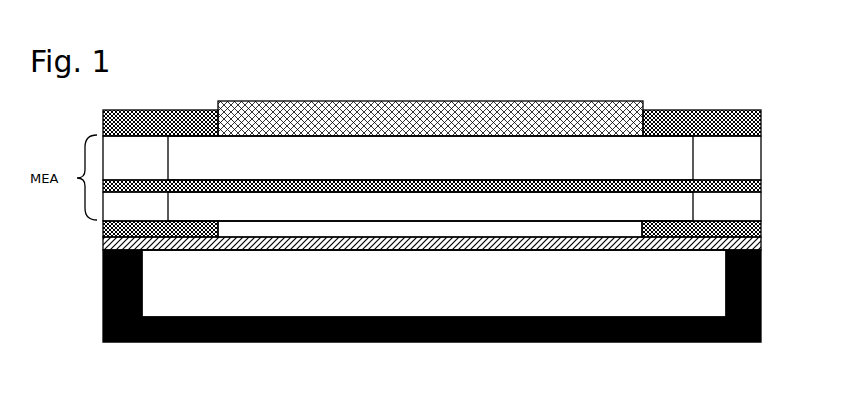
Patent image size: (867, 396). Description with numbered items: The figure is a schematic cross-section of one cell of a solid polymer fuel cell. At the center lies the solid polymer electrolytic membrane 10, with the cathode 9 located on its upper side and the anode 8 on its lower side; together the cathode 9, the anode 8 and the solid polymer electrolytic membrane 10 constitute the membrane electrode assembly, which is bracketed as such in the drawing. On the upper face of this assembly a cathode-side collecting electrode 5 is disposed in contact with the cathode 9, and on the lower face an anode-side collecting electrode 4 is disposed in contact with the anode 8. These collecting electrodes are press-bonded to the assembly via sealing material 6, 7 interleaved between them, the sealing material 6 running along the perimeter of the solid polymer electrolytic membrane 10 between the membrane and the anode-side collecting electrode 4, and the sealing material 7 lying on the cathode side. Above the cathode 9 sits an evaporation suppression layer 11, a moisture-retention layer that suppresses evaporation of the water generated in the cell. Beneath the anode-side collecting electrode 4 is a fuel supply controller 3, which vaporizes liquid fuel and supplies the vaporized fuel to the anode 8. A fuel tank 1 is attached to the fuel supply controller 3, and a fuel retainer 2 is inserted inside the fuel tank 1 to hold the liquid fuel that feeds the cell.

The fuel tank 1 is at (763, 326).
The fuel retainer 2 is at (712, 286).
The fuel supply controller 3 is at (763, 241).
The anode-side collecting electrode 4 is at (763, 226).
The cathode-side collecting electrode 5 is at (681, 120).
The sealing material 6 is at (763, 201).
The sealing material 7 is at (763, 158).
The anode 8 is at (228, 203).
The cathode 9 is at (278, 155).
The solid polymer electrolytic membrane 10 is at (347, 185).
The evaporation suppression layer 11 is at (462, 108).